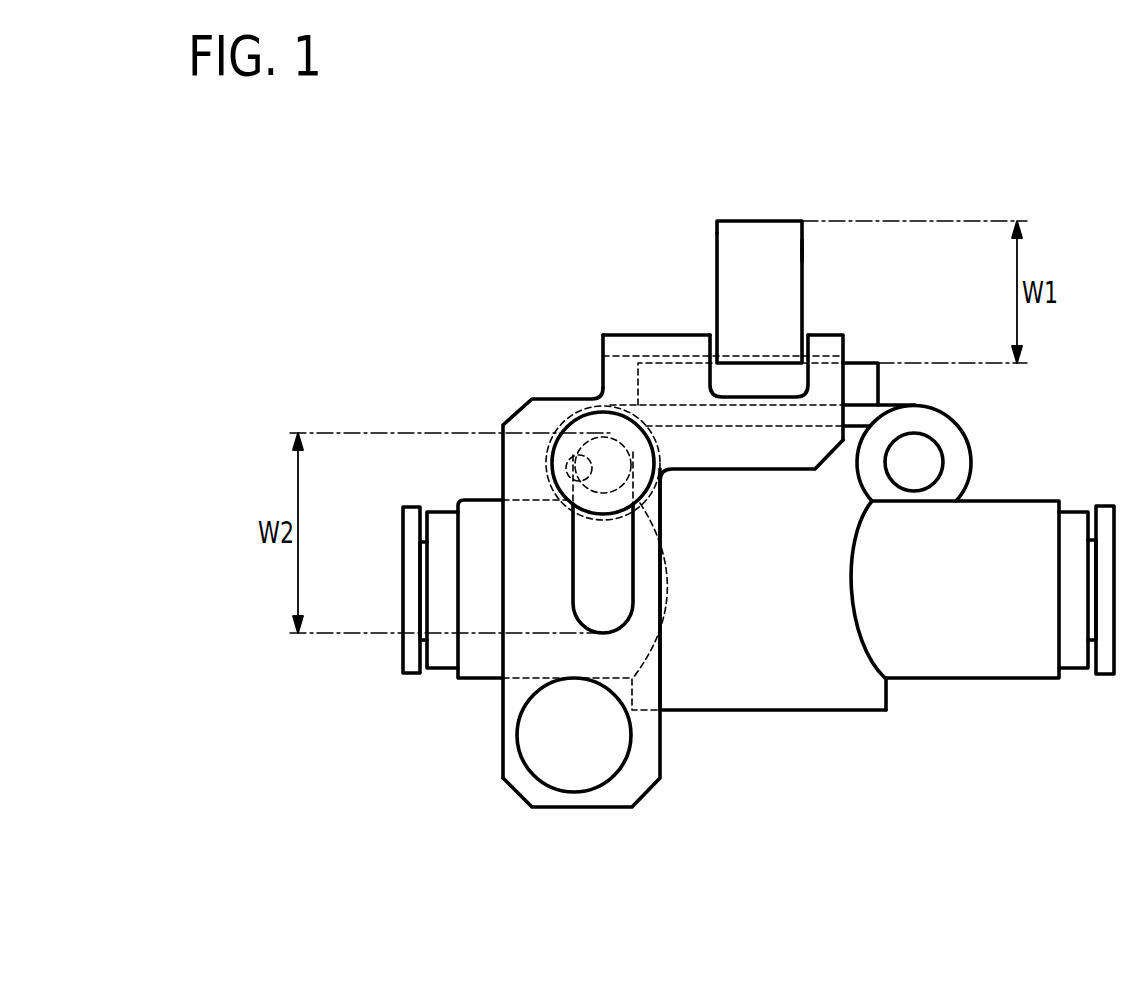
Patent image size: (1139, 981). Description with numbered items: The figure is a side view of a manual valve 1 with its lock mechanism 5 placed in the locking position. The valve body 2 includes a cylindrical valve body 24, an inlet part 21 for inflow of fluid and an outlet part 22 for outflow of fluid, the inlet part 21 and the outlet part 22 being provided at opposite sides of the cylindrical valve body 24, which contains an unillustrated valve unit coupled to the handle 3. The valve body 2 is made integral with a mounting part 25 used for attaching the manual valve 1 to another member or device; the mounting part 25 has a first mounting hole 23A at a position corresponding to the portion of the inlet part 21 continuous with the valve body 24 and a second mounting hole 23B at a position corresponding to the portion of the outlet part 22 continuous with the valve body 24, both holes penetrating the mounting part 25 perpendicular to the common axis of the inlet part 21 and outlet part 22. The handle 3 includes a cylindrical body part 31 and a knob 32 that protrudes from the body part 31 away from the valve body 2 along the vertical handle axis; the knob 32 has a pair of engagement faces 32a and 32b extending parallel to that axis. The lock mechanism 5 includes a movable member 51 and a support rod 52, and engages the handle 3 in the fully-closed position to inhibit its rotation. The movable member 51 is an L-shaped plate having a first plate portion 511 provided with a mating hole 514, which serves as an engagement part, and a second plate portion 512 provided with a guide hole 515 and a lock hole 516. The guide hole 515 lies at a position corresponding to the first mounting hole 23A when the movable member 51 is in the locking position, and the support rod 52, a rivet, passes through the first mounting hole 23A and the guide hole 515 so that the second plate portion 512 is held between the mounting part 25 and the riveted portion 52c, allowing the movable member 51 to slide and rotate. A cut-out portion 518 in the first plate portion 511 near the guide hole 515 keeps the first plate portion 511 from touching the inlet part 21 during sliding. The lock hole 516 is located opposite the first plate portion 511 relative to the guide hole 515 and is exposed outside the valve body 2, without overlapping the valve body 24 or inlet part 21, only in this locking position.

The manual valve 1 is at (762, 134).
The valve body 2 is at (856, 728).
The handle 3 is at (907, 248).
The lock mechanism 5 is at (518, 271).
The inlet part 21 is at (462, 504).
The outlet part 22 is at (1012, 507).
The first mounting hole 23A is at (566, 456).
The second mounting hole 23B is at (920, 433).
The cylindrical valve body 24 is at (798, 688).
The mounting part 25 is at (858, 413).
The body part 31 is at (867, 372).
The knob 32 is at (780, 283).
The engagement face 32a is at (717, 233).
The engagement face 32b is at (802, 250).
The movable member 51 is at (533, 389).
The support rod 52 is at (607, 448).
The riveted portion 52c is at (610, 502).
The first plate portion 511 is at (643, 333).
The second plate portion 512 is at (733, 447).
The mating hole 514 is at (710, 347).
The guide hole 515 is at (625, 595).
The lock hole 516 is at (532, 766).
The cut-out portion 518 is at (603, 344).